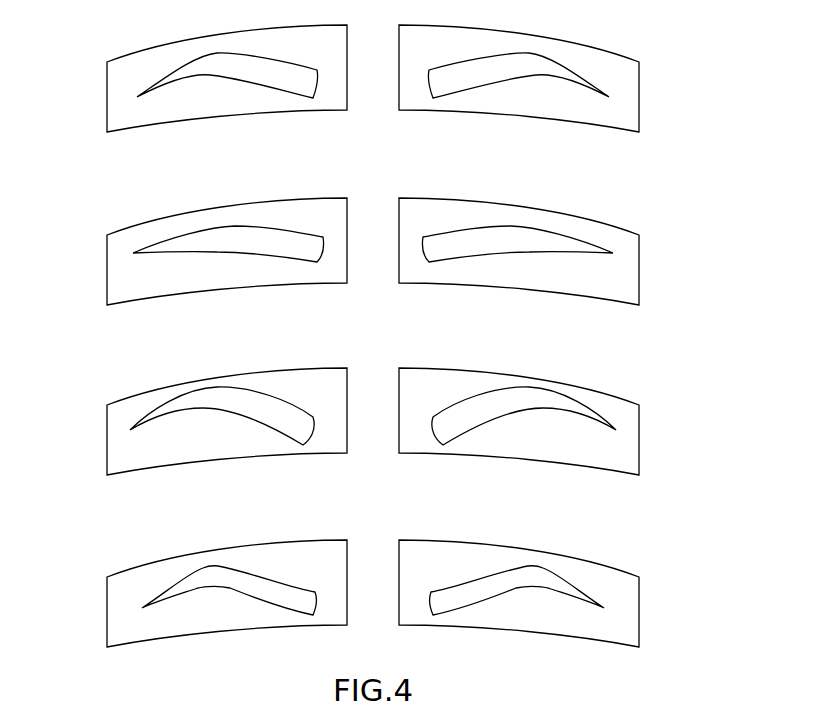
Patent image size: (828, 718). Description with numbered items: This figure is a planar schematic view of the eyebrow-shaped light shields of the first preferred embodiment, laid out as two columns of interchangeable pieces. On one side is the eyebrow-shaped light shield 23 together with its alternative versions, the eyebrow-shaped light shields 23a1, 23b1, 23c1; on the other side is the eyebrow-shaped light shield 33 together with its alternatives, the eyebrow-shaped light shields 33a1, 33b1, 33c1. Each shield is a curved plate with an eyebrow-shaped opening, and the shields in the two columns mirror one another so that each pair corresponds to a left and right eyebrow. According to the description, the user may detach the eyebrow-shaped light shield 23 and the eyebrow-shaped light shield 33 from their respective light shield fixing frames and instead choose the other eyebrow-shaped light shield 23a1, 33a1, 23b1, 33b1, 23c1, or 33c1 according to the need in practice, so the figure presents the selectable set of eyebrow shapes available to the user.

The eyebrow-shaped light shield 23 is at (195, 78).
The eyebrow-shaped light shield 23a1 is at (183, 251).
The eyebrow-shaped light shield 23b1 is at (183, 421).
The eyebrow-shaped light shield 23c1 is at (184, 593).
The eyebrow-shaped light shield 33 is at (549, 78).
The eyebrow-shaped light shield 33a1 is at (561, 251).
The eyebrow-shaped light shield 33b1 is at (561, 421).
The eyebrow-shaped light shield 33c1 is at (561, 593).